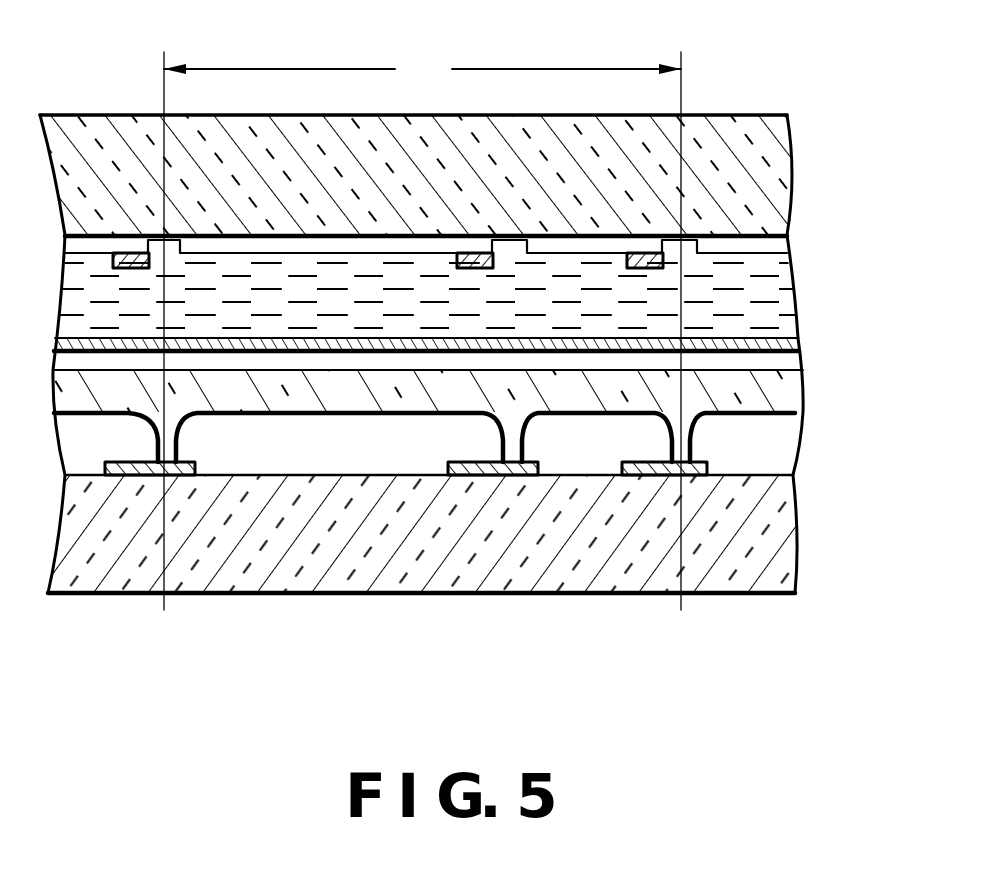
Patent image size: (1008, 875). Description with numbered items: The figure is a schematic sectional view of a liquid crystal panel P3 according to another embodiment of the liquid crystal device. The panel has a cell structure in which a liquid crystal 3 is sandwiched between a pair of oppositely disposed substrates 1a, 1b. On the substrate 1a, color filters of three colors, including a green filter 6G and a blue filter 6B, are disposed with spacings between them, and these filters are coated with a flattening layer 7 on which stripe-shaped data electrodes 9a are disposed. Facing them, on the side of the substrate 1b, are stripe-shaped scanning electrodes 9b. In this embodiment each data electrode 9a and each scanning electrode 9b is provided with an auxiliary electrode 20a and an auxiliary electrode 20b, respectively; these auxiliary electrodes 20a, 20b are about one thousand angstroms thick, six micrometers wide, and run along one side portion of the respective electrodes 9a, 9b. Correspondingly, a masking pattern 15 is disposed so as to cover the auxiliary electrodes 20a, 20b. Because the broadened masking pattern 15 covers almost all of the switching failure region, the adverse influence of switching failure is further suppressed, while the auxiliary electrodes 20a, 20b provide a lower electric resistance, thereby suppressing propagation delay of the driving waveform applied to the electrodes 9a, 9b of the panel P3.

The substrate 1a is at (773, 532).
The substrate 1b is at (773, 167).
The liquid crystal 3 is at (773, 295).
The green filter 6G is at (343, 460).
The blue filter 6B is at (595, 458).
The flattening layer 7 is at (787, 390).
The data electrode 9a is at (780, 360).
The scanning electrode 9b is at (773, 247).
The masking pattern 15 is at (713, 468).
The auxiliary electrode 20a is at (787, 345).
The auxiliary electrode 20b is at (648, 264).
The liquid crystal panel P3 is at (733, 97).